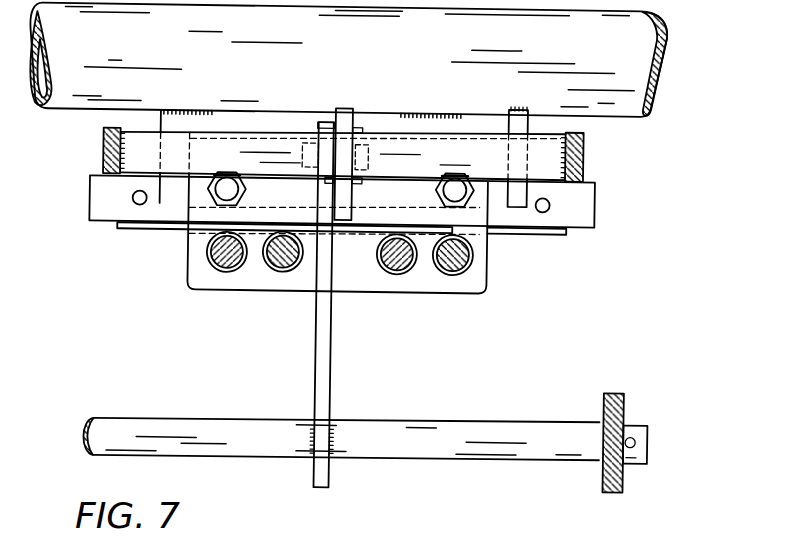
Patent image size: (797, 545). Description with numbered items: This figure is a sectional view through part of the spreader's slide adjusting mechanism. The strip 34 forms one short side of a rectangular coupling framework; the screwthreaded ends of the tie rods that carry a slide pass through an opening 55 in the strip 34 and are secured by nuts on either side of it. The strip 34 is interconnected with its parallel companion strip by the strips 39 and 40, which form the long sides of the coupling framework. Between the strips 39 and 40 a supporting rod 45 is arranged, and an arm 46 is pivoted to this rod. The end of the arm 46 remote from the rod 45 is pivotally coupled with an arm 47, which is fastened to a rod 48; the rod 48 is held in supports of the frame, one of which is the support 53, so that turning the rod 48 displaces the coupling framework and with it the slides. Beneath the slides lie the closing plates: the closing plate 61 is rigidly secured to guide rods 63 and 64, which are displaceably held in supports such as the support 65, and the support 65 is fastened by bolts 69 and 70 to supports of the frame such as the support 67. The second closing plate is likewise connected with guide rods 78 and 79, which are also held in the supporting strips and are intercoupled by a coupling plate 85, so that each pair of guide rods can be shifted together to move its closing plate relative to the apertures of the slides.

The strip 34 is at (570, 200).
The strip 39 is at (584, 133).
The strip 40 is at (103, 132).
The supporting rod 45 is at (272, 145).
The arm 46 is at (366, 94).
The arm 47 is at (334, 405).
The rod 48 is at (200, 398).
The support 53 is at (624, 386).
The opening 55 is at (135, 203).
The closing plate 61 is at (513, 229).
The guide rod 63 is at (207, 250).
The guide rod 64 is at (407, 269).
The support 65 is at (243, 281).
The support 67 is at (398, 107).
The bolt 69 is at (222, 171).
The bolt 70 is at (455, 168).
The guide rod 78 is at (281, 270).
The guide rod 79 is at (455, 270).
The coupling plate 85 is at (368, 231).